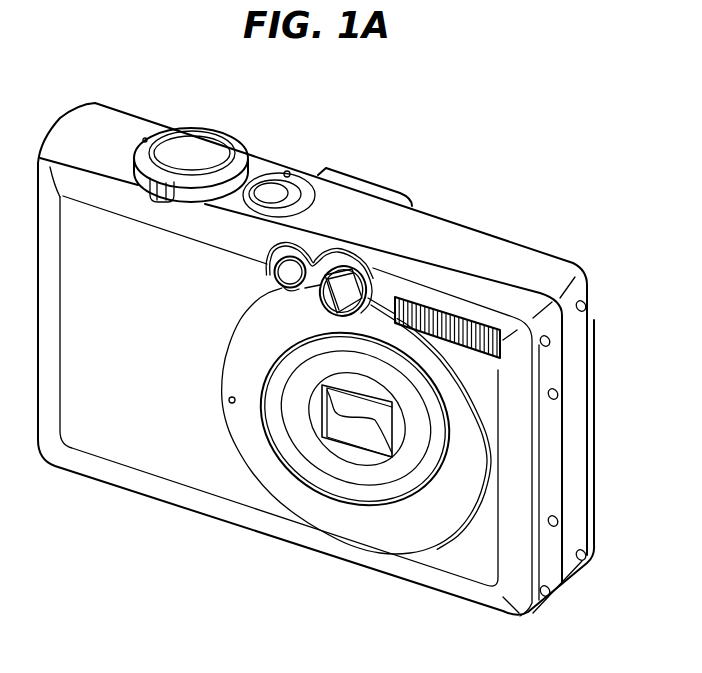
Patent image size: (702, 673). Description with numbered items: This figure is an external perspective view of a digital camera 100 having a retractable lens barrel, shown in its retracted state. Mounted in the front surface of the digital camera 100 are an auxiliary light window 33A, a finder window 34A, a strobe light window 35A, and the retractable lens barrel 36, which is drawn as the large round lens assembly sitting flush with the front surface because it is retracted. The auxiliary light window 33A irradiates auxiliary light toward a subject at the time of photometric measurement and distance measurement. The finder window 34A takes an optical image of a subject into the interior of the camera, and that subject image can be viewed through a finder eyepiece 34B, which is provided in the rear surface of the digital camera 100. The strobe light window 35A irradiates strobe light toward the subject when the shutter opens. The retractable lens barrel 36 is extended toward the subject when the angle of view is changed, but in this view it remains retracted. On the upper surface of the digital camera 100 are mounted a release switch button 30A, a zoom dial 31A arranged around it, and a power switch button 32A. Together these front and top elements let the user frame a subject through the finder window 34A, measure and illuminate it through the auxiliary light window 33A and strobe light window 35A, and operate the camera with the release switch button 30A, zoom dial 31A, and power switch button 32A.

The digital camera 100 is at (137, 508).
The release switch button 30A is at (197, 140).
The zoom dial 31A is at (236, 143).
The power switch button 32A is at (271, 187).
The auxiliary light window 33A is at (291, 270).
The finder window 34A is at (343, 290).
The finder eyepiece 34B is at (318, 260).
The strobe light window 35A is at (447, 312).
The retractable lens barrel 36 is at (355, 476).